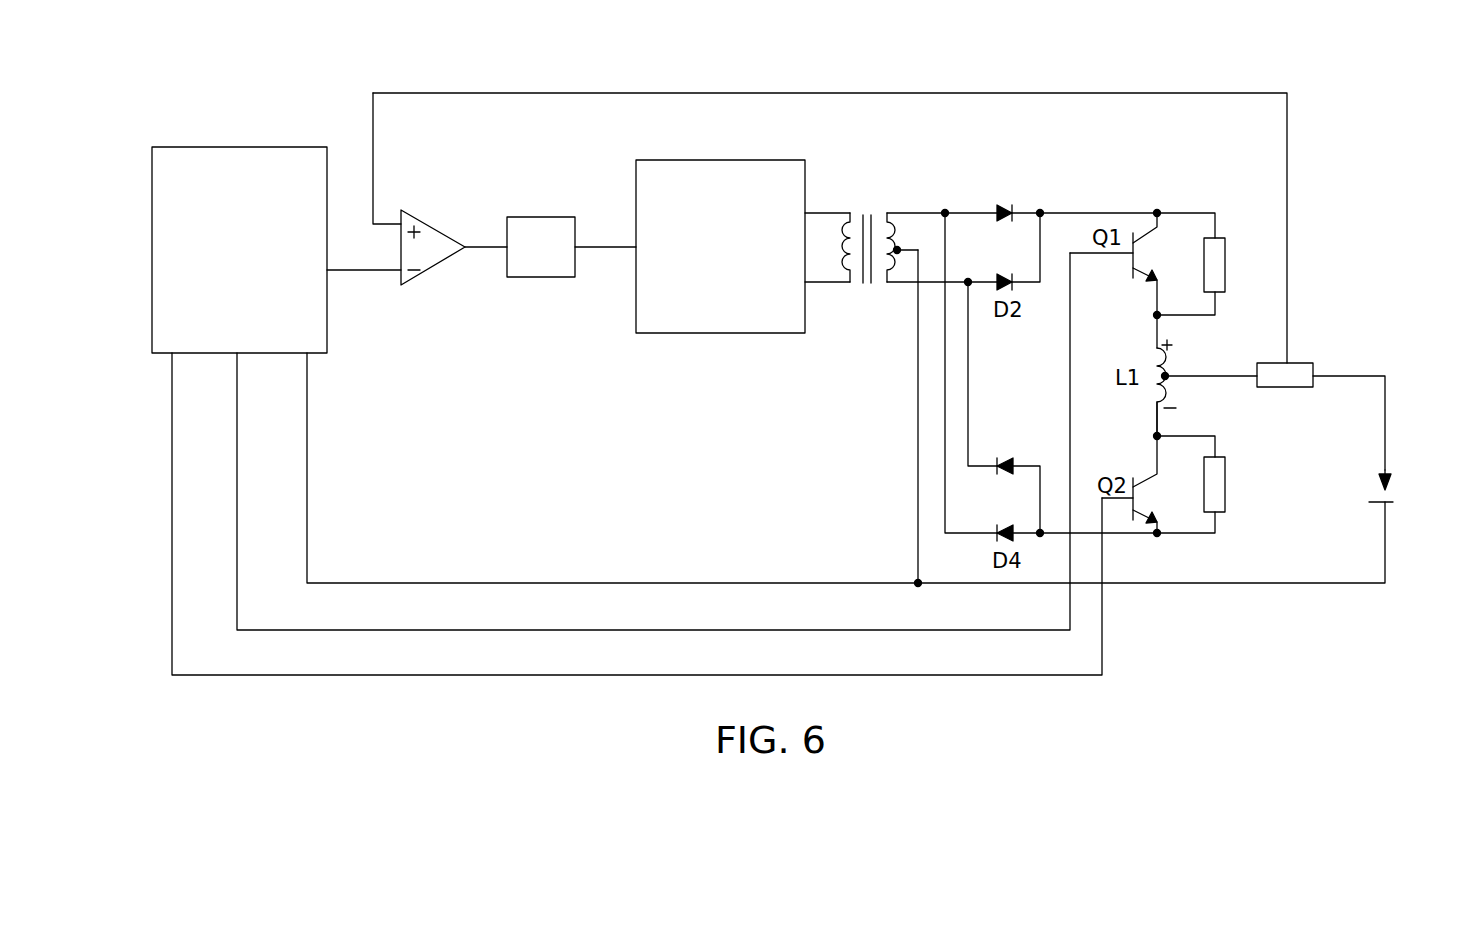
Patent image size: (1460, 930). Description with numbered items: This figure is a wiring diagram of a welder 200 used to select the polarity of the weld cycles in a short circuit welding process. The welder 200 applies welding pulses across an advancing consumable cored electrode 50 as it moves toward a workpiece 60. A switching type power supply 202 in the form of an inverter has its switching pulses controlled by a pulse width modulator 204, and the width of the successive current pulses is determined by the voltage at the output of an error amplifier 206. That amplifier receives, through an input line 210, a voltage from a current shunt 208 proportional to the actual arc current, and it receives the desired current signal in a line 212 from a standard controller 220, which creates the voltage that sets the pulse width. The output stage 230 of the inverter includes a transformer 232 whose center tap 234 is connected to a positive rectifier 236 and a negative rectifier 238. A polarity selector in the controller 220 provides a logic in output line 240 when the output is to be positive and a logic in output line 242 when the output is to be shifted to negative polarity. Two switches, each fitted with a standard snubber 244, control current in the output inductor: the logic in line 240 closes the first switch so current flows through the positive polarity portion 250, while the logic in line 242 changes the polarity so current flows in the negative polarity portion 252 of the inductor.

The welder 200 is at (895, 66).
The switching type power supply 202 is at (718, 160).
The pulse width modulator 204 is at (540, 217).
The error amplifier 206 is at (432, 222).
The current shunt 208 is at (1300, 362).
The input line 210 is at (483, 92).
The line 212 is at (368, 272).
The controller 220 is at (248, 147).
The output stage 230 is at (904, 240).
The transformer 232 is at (867, 287).
The center tap 234 is at (899, 248).
The positive rectifier 236 is at (1017, 210).
The negative rectifier 238 is at (1015, 462).
The output line 240 is at (923, 632).
The output line 242 is at (997, 677).
The snubber 244 is at (1227, 262).
The positive polarity portion 250 is at (1148, 355).
The negative polarity portion 252 is at (1148, 400).
The consumable cored electrode 50 is at (1393, 485).
The workpiece 60 is at (1393, 503).